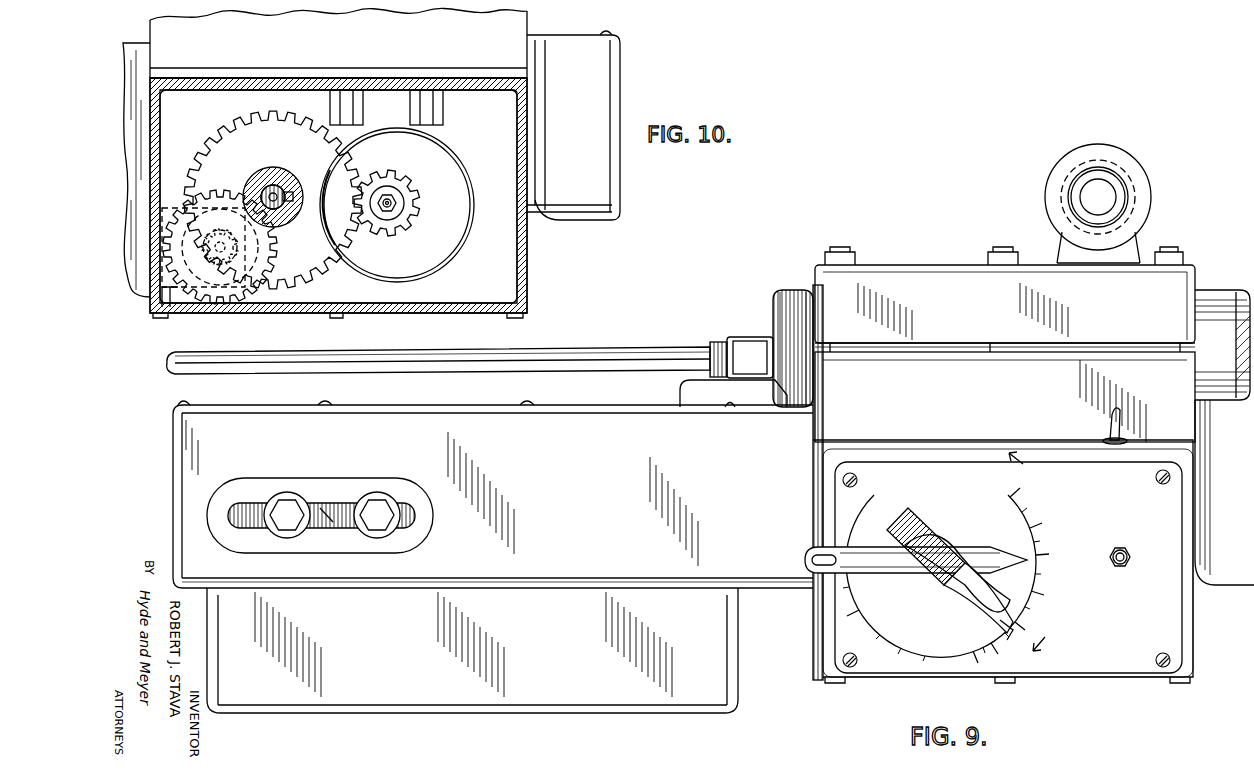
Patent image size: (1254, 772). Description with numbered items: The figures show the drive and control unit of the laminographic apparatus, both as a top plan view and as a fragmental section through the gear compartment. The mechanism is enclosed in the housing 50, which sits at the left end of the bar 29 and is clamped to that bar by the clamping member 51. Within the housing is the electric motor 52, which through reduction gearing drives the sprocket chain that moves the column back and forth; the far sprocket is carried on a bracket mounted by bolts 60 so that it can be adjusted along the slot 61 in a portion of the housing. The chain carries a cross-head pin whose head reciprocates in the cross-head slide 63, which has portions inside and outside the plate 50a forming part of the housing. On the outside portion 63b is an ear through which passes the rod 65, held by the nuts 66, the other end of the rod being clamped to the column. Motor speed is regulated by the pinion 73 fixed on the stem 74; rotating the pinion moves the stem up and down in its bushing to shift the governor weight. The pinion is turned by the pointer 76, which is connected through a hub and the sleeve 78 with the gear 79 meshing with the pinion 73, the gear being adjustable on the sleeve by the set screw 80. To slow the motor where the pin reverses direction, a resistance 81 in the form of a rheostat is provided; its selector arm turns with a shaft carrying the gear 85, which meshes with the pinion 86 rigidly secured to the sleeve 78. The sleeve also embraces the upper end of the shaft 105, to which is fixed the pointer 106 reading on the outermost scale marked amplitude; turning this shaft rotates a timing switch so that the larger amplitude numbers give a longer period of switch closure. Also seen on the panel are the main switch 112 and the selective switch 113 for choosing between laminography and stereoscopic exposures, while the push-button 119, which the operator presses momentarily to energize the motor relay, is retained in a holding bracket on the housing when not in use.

In FIG. 9, the bar 29 is at (1228, 290).
In FIG. 10, the housing 50 is at (518, 263).
In FIG. 9, the housing 50 is at (1218, 623).
In FIG. 9, the plate 50a is at (556, 405).
In FIG. 9, the clamping member 51 is at (935, 275).
In FIG. 10, the electric motor 52 is at (425, 262).
In FIG. 9, the bolts 60 is at (284, 510).
In FIG. 9, the slot 61 is at (326, 508).
In FIG. 9, the cross-head slide 63 is at (745, 341).
In FIG. 9, the outside portion of cross-head slide 63b is at (690, 395).
In FIG. 9, the rod 65 is at (650, 340).
In FIG. 9, the nuts 66 is at (716, 345).
In FIG. 10, the pinion 73 is at (402, 228).
In FIG. 10, the stem 74 is at (392, 198).
In FIG. 9, the pointer 76 is at (880, 552).
In FIG. 10, the sleeve 78 is at (293, 205).
In FIG. 10, the gear 79 is at (273, 200).
In FIG. 10, the set screw 80 is at (290, 196).
In FIG. 10, the resistance 81 is at (190, 300).
In FIG. 10, the gear 85 is at (258, 292).
In FIG. 10, the pinion 86 is at (291, 192).
In FIG. 10, the shaft 105 is at (283, 190).
In FIG. 9, the pointer 106 is at (935, 530).
In FIG. 9, the main switch 112 is at (1108, 413).
In FIG. 9, the selective switch 113 is at (1124, 562).
In FIG. 9, the push-button 119 is at (1137, 217).